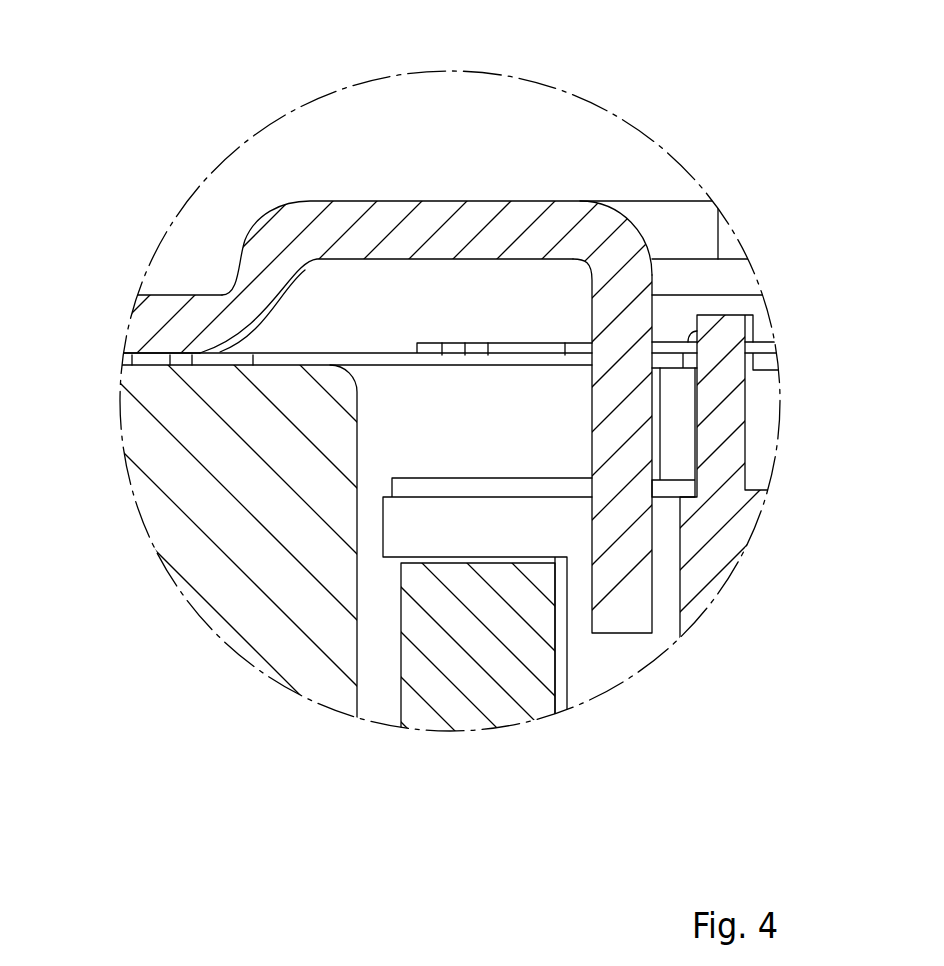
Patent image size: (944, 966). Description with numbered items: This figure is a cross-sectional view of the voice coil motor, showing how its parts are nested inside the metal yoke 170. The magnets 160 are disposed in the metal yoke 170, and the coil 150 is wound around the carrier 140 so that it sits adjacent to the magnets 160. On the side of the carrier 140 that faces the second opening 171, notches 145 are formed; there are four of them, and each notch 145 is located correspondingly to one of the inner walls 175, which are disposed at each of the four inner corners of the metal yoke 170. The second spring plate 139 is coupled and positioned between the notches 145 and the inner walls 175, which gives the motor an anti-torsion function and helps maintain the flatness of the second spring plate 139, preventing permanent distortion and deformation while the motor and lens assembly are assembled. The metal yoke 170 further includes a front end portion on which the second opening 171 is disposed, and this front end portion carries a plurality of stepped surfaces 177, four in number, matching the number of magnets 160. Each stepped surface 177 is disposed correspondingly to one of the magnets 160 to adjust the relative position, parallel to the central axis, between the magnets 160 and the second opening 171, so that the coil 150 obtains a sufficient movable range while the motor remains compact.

The second spring plate 139 is at (250, 360).
The carrier 140 is at (727, 427).
The notches 145 is at (588, 657).
The coil 150 is at (455, 698).
The magnets 160 is at (177, 505).
The metal yoke 170 is at (437, 200).
The second opening 171 is at (672, 222).
The inner walls 175 is at (628, 312).
The stepped surfaces 177 is at (173, 295).